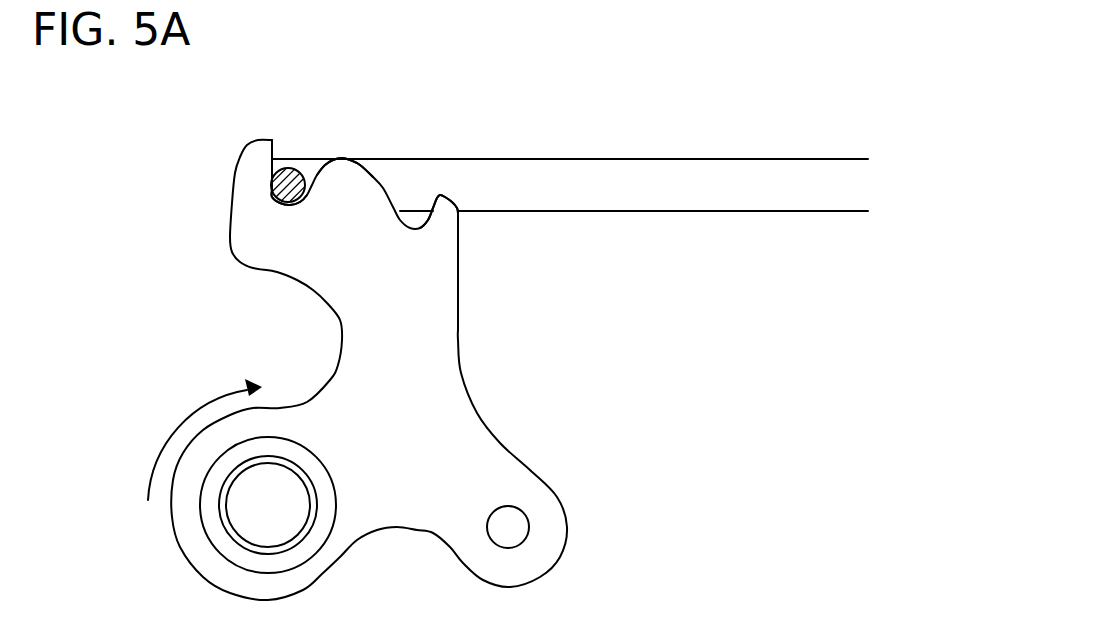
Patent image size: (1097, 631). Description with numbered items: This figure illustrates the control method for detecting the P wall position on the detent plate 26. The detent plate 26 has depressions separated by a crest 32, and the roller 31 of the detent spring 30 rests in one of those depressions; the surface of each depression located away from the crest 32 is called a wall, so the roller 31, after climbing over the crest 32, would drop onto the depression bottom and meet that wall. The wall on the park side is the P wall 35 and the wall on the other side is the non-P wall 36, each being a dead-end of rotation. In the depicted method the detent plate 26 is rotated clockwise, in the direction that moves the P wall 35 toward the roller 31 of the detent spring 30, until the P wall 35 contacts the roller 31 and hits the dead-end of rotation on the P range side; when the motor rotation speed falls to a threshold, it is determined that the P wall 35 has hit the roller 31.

The detent plate 26 is at (462, 372).
The detent spring 30 is at (618, 159).
The roller 31 is at (290, 163).
The crest 32 is at (342, 157).
The P wall 35 is at (275, 148).
The non-P wall 36 is at (433, 197).